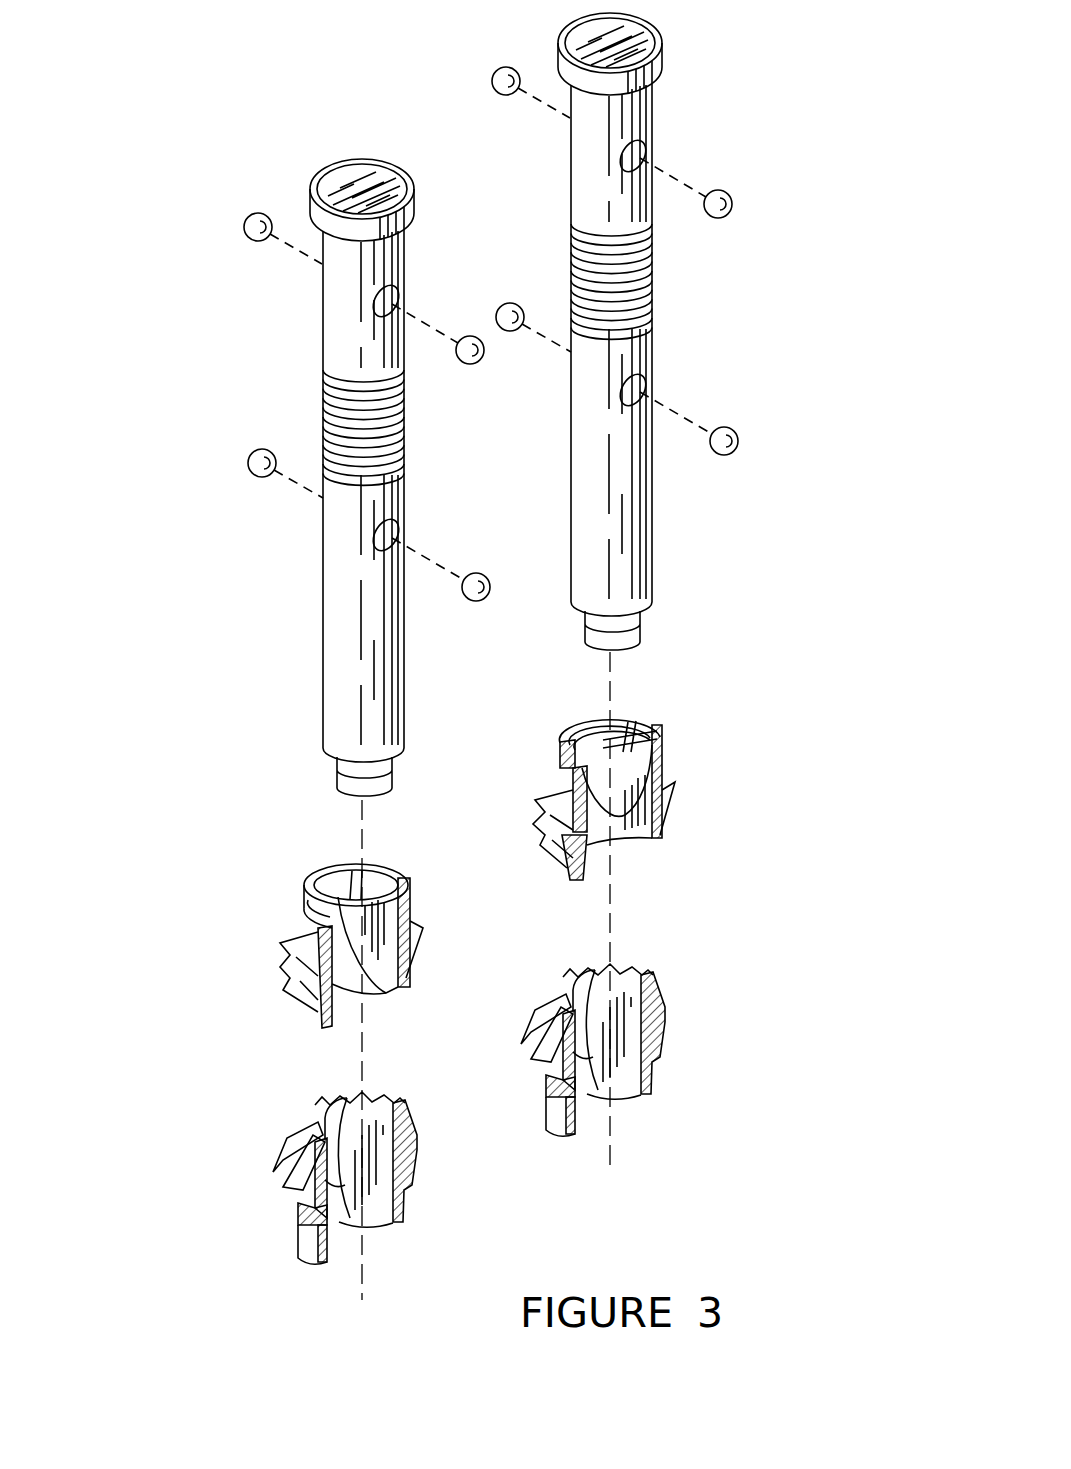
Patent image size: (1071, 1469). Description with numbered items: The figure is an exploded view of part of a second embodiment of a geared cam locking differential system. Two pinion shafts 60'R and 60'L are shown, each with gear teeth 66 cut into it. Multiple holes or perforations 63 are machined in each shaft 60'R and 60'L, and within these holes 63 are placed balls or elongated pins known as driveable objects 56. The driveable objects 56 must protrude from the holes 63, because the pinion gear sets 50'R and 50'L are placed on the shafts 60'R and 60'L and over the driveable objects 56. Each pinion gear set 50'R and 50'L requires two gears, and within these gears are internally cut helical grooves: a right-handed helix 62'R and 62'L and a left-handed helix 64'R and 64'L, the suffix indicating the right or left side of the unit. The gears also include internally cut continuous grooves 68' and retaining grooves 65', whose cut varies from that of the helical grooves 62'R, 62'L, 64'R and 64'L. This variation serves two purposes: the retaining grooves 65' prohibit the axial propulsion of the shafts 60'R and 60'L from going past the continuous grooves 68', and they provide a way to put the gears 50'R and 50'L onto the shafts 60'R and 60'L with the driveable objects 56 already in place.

The pinion shaft 60'L is at (263, 453).
The pinion shaft 60'R is at (712, 331).
The driveable objects 56 is at (248, 217).
The holes 63 is at (376, 301).
The gear teeth 66 is at (335, 420).
The retaining grooves 65' is at (491, 777).
The continuous grooves 68' is at (491, 803).
The right handed helical groove 62'L is at (268, 946).
The left handed helical groove 64'L is at (265, 1178).
The pinion gear set 50'L is at (268, 1064).
The left handed helical groove 64'R is at (700, 800).
The right handed helical groove 62'R is at (694, 1050).
The pinion gear set 50'R is at (694, 928).